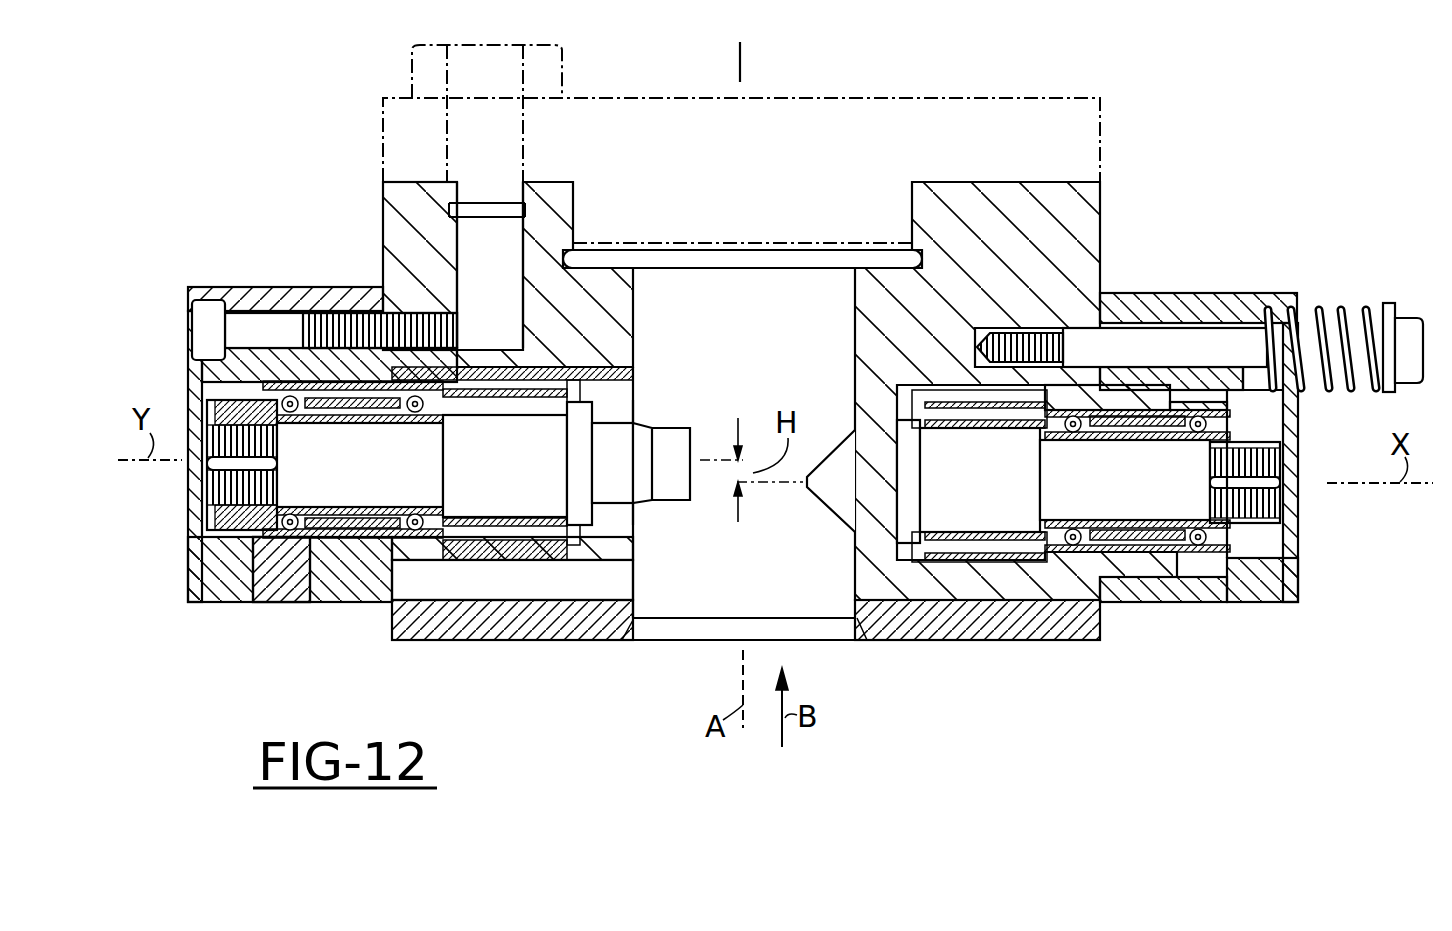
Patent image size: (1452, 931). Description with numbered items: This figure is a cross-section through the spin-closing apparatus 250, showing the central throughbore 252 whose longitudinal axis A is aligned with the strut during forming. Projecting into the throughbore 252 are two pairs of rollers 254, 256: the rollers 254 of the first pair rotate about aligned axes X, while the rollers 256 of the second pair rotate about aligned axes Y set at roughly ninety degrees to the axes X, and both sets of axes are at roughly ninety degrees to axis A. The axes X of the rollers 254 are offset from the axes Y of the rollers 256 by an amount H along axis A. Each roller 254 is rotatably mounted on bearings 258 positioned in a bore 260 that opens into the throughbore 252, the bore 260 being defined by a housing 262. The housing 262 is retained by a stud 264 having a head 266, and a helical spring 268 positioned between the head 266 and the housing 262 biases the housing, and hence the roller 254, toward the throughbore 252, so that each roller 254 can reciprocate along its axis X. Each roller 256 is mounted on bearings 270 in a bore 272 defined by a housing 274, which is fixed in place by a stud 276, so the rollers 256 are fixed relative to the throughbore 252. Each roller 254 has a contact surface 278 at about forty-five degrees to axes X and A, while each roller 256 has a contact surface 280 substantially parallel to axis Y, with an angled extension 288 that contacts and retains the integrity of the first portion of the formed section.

The apparatus 250 is at (1148, 197).
The throughbore 252 is at (700, 587).
The rollers of the first pair 254 is at (1010, 497).
The rollers of the second pair 256 is at (530, 478).
The bearings 258 is at (1180, 535).
The bore 260 is at (997, 513).
The housing 262 is at (1220, 580).
The stud 264 is at (1183, 340).
The head 266 is at (1407, 330).
The helical spring 268 is at (1365, 322).
The bearings 270 is at (412, 532).
The bore 272 is at (492, 510).
The housing 274 is at (282, 598).
The stud 276 is at (282, 327).
The contact surface 278 is at (828, 505).
The contact surface 280 is at (672, 478).
The extension 288 is at (637, 421).